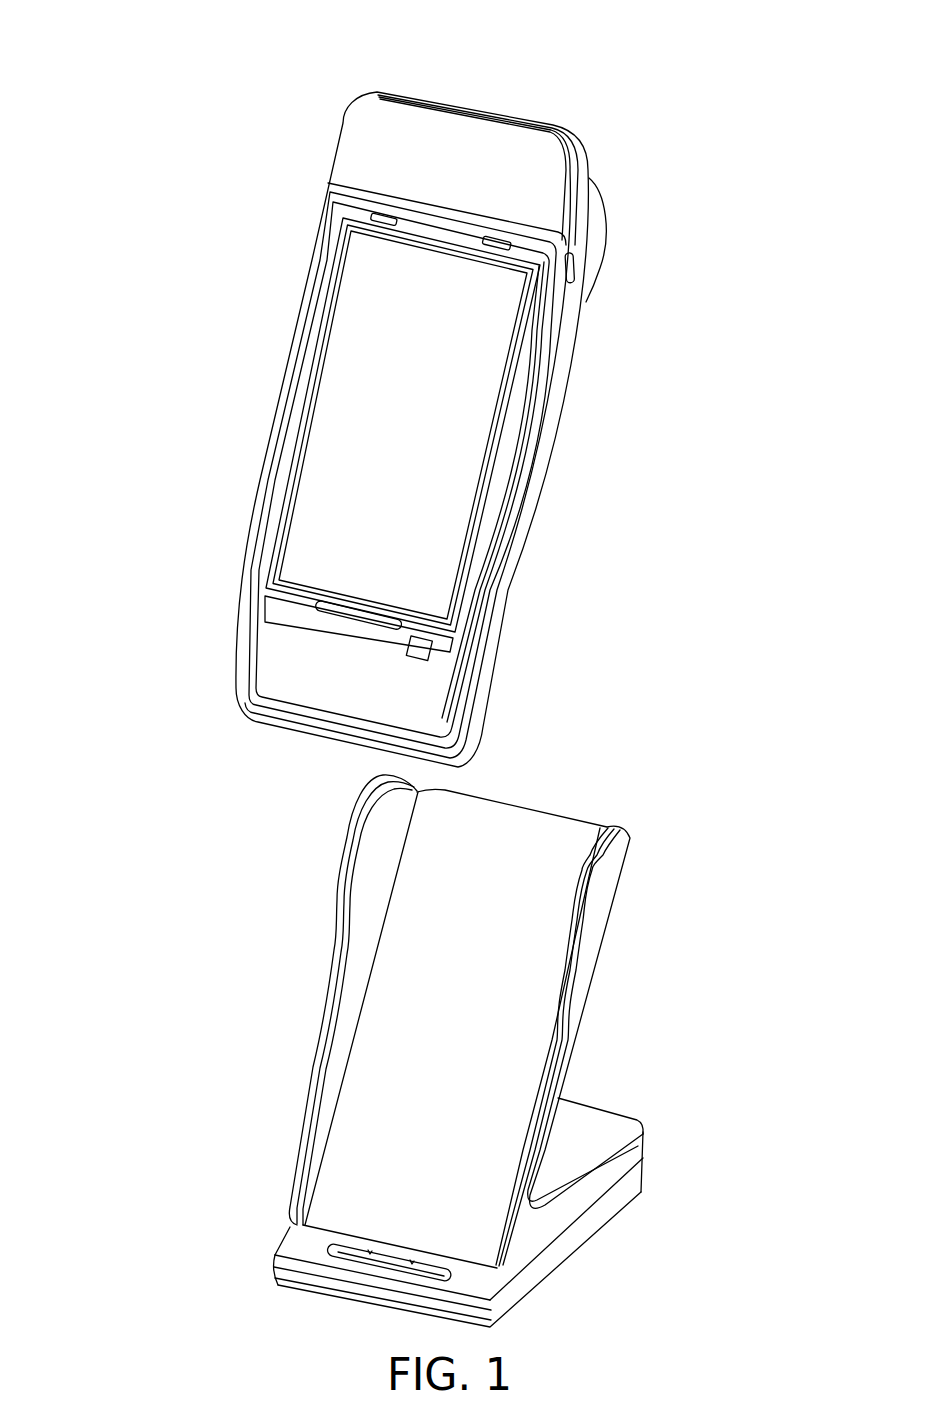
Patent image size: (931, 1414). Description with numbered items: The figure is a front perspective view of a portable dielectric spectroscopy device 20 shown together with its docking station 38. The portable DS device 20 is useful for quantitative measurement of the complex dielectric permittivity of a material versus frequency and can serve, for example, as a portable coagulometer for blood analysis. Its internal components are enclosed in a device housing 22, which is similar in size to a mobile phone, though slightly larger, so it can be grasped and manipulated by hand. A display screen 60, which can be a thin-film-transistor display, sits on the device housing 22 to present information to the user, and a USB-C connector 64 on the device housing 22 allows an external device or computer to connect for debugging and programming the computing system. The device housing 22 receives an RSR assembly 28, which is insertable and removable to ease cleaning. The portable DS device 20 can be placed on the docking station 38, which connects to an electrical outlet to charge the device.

The portable dielectric spectroscopy device 20 is at (156, 355).
The RSR assembly 28 is at (349, 76).
The device housing 22 is at (583, 298).
The USB-C connector 64 is at (576, 269).
The display screen 60 is at (340, 456).
The docking station 38 is at (725, 938).